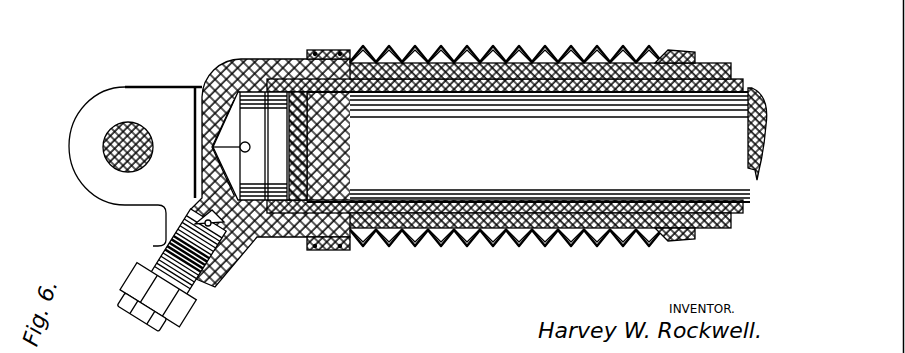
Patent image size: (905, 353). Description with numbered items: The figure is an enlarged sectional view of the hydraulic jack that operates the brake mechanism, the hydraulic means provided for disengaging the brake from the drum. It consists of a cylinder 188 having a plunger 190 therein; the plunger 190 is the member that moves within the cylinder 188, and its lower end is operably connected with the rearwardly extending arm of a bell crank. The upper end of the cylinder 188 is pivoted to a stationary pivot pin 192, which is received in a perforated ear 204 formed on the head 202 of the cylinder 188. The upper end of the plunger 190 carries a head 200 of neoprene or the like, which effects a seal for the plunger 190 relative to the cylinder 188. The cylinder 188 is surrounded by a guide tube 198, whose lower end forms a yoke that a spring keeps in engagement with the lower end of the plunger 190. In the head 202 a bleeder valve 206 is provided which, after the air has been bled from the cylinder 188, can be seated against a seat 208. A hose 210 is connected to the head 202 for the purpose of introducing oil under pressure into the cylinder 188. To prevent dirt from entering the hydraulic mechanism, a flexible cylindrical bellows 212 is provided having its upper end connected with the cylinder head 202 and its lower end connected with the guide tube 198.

The cylinder 188 is at (438, 60).
The plunger 190 is at (537, 145).
The stationary pivot pin 192 is at (119, 124).
The guide tube 198 is at (605, 66).
The head 200 is at (277, 59).
The head 202 is at (220, 65).
The perforated ear 204 is at (138, 97).
The bleeder valve 206 is at (189, 296).
The seat 208 is at (240, 255).
The hose 210 is at (203, 140).
The flexible cylindrical bellows 212 is at (473, 248).